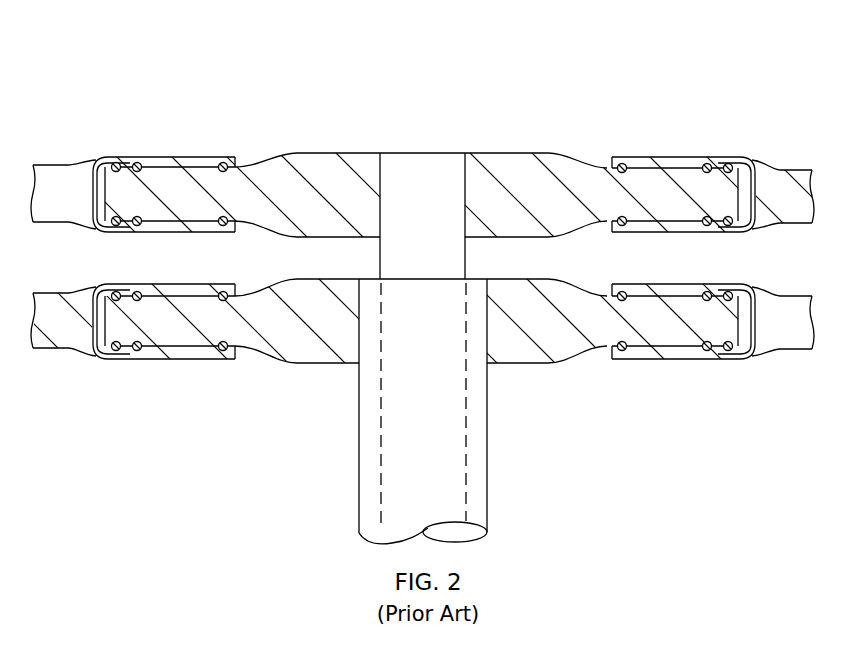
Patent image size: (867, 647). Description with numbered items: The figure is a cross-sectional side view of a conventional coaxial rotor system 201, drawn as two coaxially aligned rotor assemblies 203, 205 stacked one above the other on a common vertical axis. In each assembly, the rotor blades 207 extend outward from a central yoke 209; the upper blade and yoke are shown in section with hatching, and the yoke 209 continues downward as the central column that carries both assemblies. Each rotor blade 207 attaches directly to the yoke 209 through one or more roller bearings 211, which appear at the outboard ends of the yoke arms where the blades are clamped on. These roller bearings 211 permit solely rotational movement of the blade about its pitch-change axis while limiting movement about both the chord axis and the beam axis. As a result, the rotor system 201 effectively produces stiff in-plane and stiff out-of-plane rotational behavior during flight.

The rotor system 201 is at (120, 62).
The rotor assembly 203 is at (705, 383).
The rotor assembly 205 is at (688, 118).
The rotor blade 207 is at (752, 157).
The yoke 209 is at (532, 153).
The roller bearing 211 is at (232, 160).